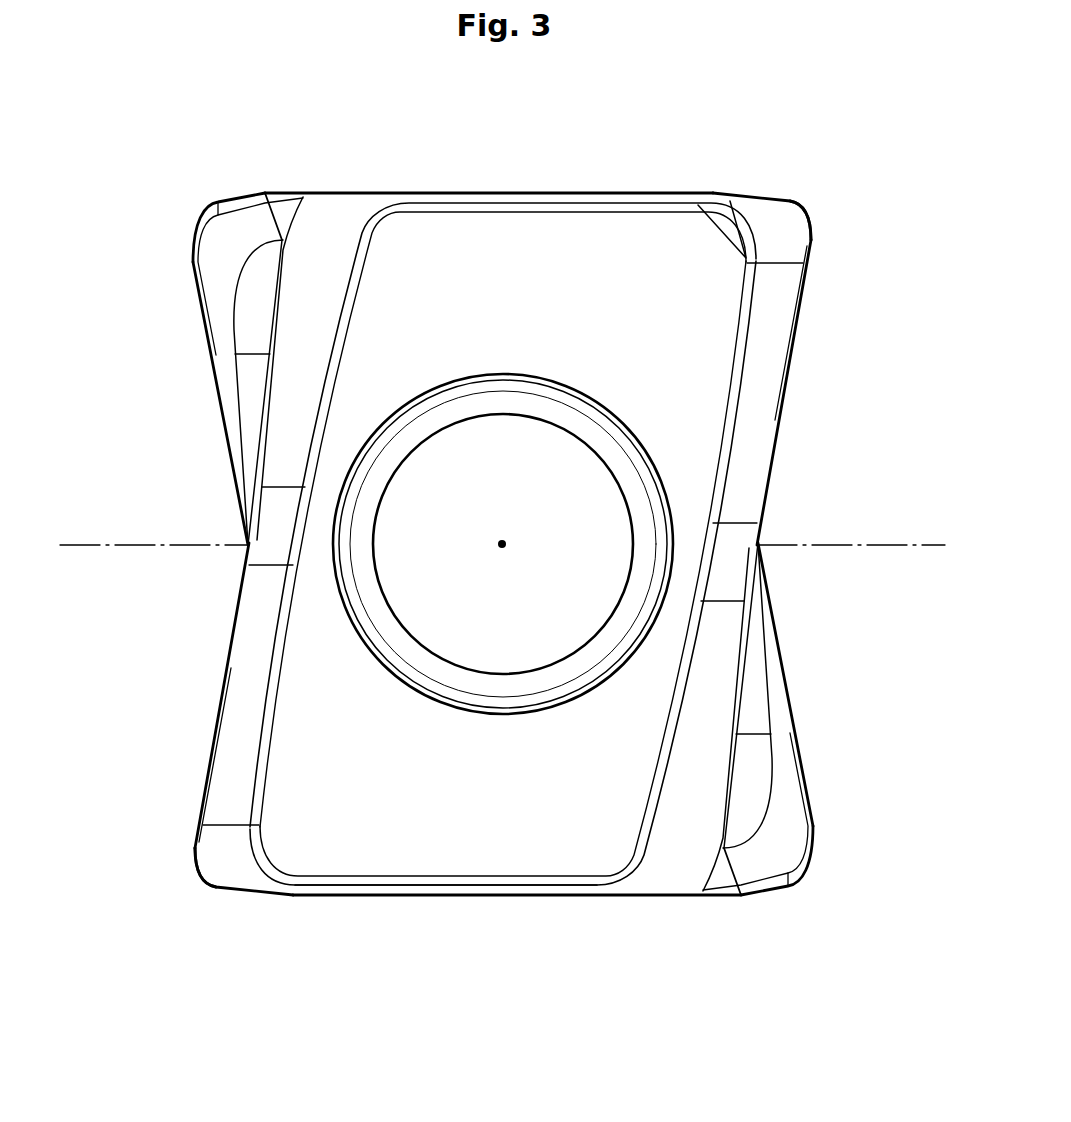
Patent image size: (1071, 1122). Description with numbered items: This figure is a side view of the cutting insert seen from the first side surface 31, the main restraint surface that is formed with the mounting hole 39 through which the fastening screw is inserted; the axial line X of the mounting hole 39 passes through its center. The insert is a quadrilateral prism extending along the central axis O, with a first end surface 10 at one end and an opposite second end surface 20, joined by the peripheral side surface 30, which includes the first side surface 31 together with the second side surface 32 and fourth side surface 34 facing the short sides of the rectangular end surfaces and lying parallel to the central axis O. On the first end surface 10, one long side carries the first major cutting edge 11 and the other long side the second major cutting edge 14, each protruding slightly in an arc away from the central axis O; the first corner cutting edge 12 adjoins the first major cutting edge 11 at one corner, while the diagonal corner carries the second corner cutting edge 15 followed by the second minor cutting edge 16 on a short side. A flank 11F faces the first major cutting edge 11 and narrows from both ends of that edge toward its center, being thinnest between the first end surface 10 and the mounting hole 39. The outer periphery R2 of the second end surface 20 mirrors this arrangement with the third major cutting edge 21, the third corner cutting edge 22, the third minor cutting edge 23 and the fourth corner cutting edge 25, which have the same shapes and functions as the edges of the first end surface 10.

The first end surface 10 is at (261, 396).
The first major cutting edge 11 is at (222, 680).
The flank 11F is at (258, 633).
The first corner cutting edge 12 is at (200, 867).
The second major cutting edge 14 is at (236, 356).
The second corner cutting edge 15 is at (200, 214).
The second minor cutting edge 16 is at (252, 188).
The second end surface 20 is at (742, 704).
The third major cutting edge 21 is at (810, 774).
The third corner cutting edge 22 is at (810, 870).
The third minor cutting edge 23 is at (758, 893).
The fourth corner cutting edge 25 is at (808, 216).
The peripheral side surface 30 is at (566, 897).
The first side surface 31 is at (562, 277).
The second side surface 32 is at (445, 894).
The fourth side surface 34 is at (488, 192).
The mounting hole 39 is at (632, 548).
The outer periphery R2 is at (193, 818).
The axial line X is at (494, 529).
The central axis O is at (516, 545).